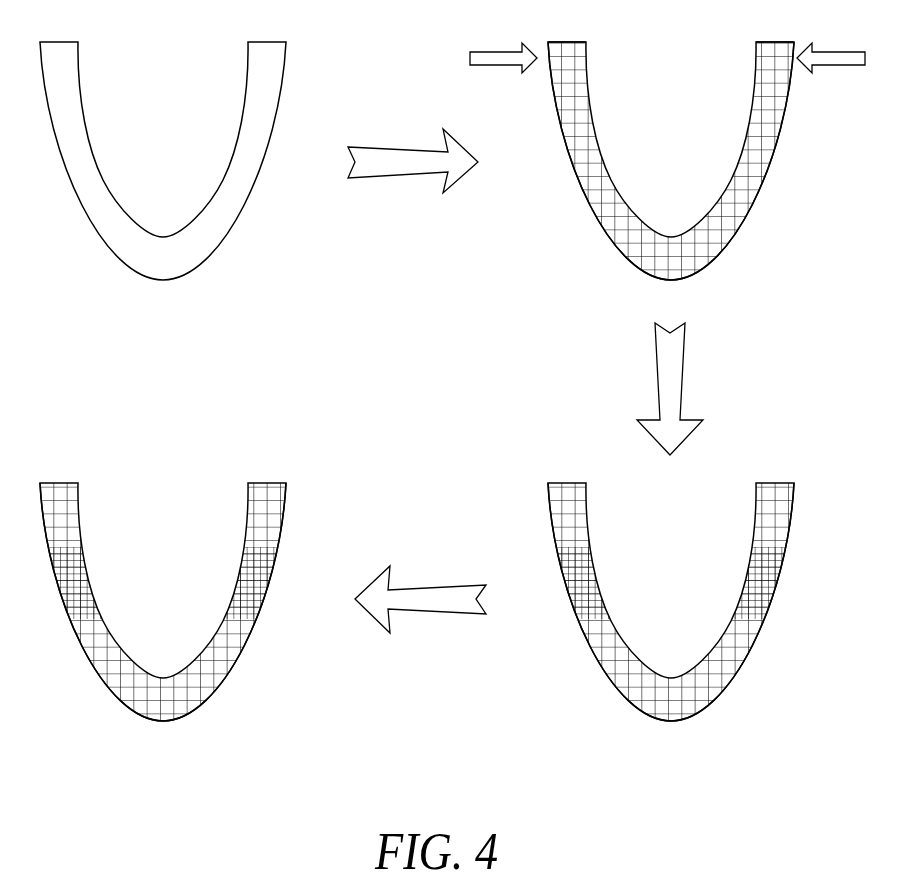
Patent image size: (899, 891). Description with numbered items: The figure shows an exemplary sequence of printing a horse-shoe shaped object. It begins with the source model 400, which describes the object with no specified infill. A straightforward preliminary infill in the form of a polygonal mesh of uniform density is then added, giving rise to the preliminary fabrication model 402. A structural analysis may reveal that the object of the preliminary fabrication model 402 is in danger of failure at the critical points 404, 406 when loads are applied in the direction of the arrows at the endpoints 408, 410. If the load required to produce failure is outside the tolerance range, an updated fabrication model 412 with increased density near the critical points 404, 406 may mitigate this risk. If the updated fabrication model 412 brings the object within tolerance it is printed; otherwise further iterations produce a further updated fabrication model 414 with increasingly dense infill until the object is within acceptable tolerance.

The source model 400 is at (83, 219).
The preliminary fabrication model 402 is at (648, 278).
The critical point 404 is at (568, 150).
The critical point 406 is at (774, 143).
The endpoint 408 is at (566, 41).
The endpoint 410 is at (775, 41).
The updated fabrication model 412 is at (670, 722).
The further updated fabrication model 414 is at (163, 723).